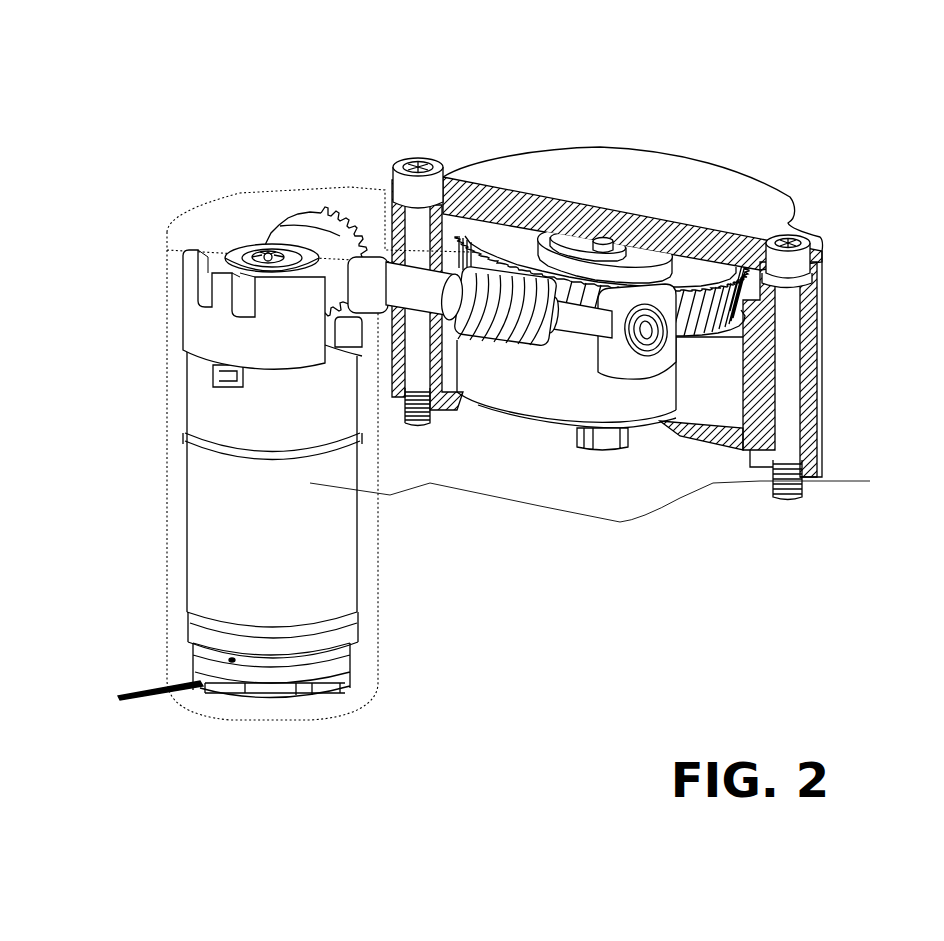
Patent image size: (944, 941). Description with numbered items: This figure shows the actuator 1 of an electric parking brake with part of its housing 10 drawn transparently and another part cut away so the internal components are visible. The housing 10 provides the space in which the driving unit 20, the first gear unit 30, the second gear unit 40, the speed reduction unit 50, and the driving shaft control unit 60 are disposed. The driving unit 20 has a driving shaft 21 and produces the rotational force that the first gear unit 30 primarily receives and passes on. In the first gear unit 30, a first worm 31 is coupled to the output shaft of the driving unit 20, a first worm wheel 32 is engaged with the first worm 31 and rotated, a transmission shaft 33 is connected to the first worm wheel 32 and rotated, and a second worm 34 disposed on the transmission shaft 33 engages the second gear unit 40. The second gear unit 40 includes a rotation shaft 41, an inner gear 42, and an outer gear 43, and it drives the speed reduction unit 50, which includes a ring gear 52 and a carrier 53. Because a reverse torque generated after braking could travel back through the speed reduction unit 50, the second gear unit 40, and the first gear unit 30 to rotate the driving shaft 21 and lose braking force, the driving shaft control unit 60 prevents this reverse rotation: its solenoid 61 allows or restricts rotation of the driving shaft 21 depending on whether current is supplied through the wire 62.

The actuator 1 is at (546, 47).
The housing 10 is at (659, 514).
The driving unit 20 is at (238, 528).
The driving shaft 21 is at (280, 245).
The first gear unit 30 is at (375, 322).
The first worm 31 is at (206, 218).
The first worm wheel 32 is at (352, 228).
The transmission shaft 33 is at (310, 237).
The second worm 34 is at (460, 243).
The second gear unit 40 is at (520, 243).
The rotation shaft 41 is at (641, 258).
The inner gear 42 is at (710, 257).
The outer gear 43 is at (690, 245).
The speed reduction unit 50 is at (607, 352).
The ring gear 52 is at (530, 393).
The carrier 53 is at (600, 447).
The driving shaft control unit 60 is at (271, 728).
The solenoid 61 is at (267, 677).
The wire 62 is at (160, 697).